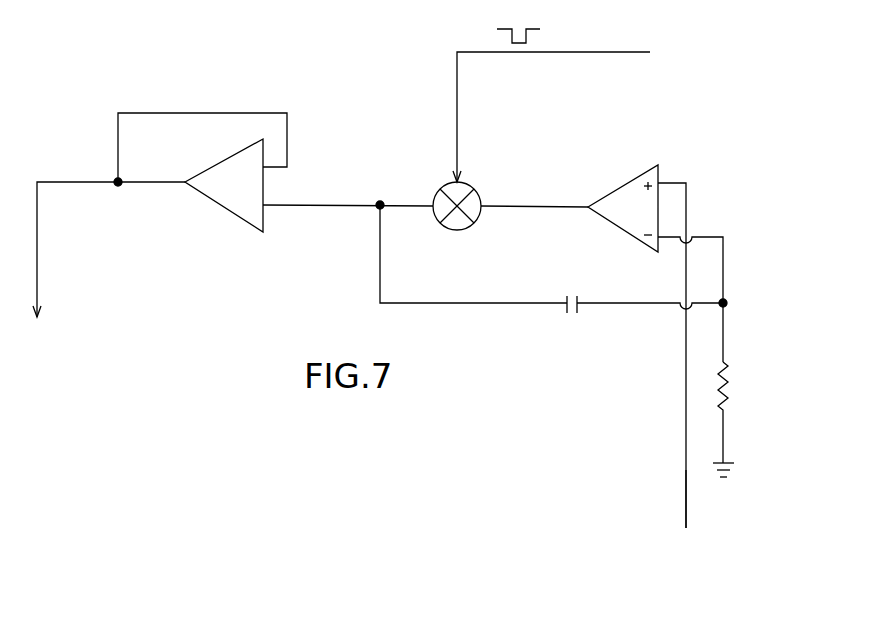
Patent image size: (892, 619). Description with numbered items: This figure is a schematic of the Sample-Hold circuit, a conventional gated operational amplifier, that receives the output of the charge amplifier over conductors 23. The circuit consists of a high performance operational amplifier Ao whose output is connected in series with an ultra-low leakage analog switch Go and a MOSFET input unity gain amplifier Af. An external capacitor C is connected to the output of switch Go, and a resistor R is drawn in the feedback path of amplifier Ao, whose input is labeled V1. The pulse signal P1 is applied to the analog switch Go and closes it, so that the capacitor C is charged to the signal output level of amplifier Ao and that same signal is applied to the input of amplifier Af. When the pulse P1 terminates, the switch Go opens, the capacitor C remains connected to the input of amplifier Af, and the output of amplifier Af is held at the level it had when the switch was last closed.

The conductors 23 is at (686, 505).
The MOSFET input unity gain amplifier Af is at (202, 172).
The ultra-low leakage analog switch Go is at (456, 225).
The high performance operational amplifier Ao is at (623, 208).
The pulse signal P1 is at (551, 102).
The external capacitor C is at (551, 274).
The resistor R is at (734, 412).
The output voltage V1 is at (681, 517).